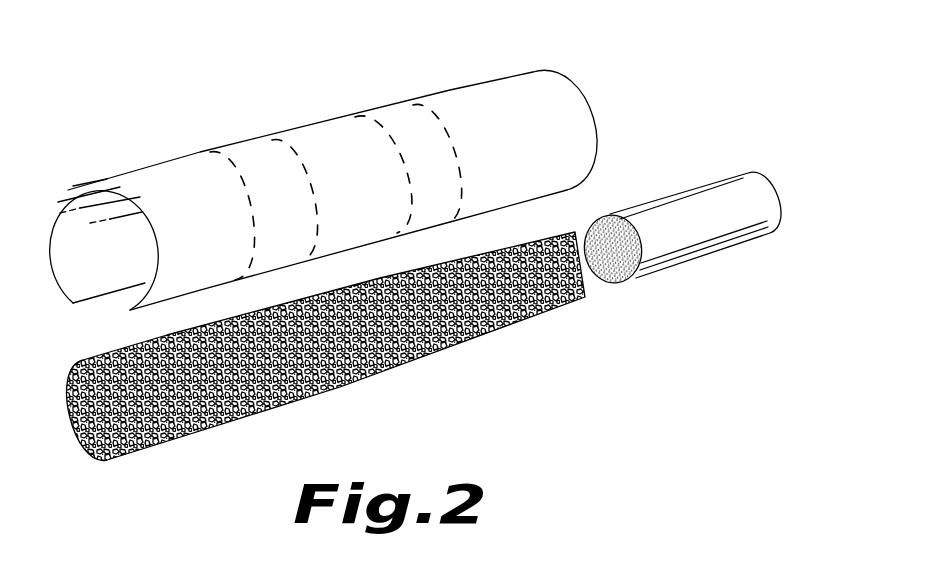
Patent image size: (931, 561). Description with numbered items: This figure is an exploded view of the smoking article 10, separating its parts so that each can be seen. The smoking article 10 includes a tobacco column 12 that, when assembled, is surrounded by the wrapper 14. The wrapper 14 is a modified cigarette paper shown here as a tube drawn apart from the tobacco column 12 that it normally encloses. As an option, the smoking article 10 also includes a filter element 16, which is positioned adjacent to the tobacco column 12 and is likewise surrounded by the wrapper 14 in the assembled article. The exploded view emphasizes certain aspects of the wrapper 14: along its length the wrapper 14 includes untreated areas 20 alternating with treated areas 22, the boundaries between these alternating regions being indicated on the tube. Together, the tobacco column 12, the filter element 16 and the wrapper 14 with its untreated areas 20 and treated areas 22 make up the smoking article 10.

The smoking article 10 is at (442, 283).
The tobacco column 12 is at (308, 390).
The wrapper 14 is at (321, 187).
The filter element 16 is at (680, 234).
The untreated areas 20 is at (132, 170).
The treated areas 22 is at (231, 145).